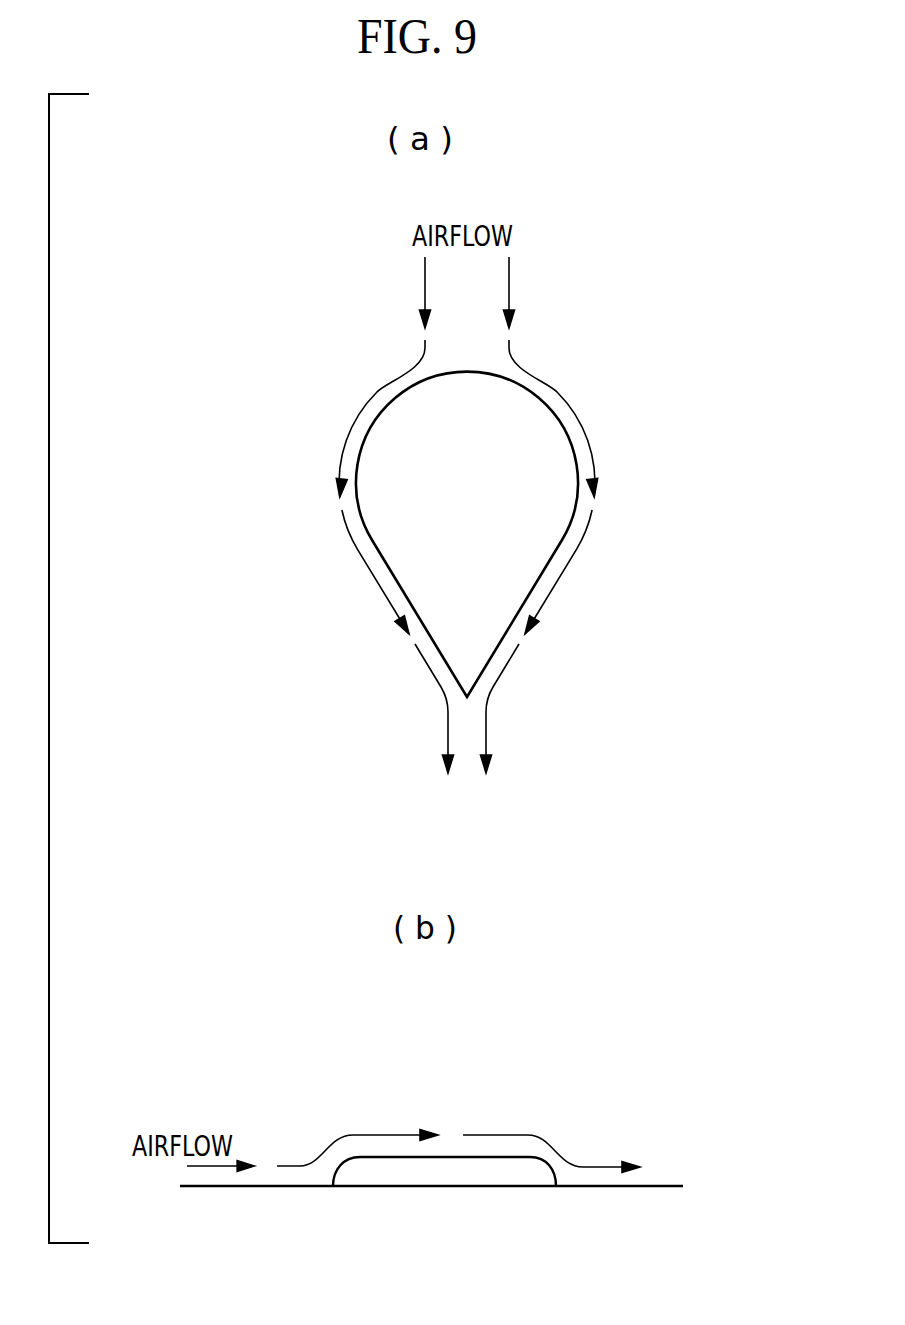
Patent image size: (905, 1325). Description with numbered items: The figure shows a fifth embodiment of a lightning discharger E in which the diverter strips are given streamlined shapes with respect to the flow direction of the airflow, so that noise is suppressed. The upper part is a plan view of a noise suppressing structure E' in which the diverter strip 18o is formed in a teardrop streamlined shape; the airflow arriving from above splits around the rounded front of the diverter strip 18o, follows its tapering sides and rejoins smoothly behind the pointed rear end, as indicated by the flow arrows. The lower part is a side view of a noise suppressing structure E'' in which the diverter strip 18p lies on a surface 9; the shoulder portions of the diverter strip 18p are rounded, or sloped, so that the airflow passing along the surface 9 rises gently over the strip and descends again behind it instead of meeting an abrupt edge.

The diverter strip 18o is at (493, 505).
The diverter strip 18p is at (456, 1157).
The surface / wall 9 is at (661, 1186).
The lightning discharger E is at (424, 377).
The noise suppressing structure E' is at (419, 641).
The noise suppressing structure E'' is at (408, 1082).